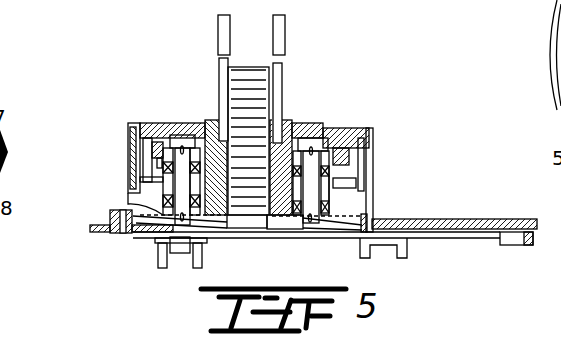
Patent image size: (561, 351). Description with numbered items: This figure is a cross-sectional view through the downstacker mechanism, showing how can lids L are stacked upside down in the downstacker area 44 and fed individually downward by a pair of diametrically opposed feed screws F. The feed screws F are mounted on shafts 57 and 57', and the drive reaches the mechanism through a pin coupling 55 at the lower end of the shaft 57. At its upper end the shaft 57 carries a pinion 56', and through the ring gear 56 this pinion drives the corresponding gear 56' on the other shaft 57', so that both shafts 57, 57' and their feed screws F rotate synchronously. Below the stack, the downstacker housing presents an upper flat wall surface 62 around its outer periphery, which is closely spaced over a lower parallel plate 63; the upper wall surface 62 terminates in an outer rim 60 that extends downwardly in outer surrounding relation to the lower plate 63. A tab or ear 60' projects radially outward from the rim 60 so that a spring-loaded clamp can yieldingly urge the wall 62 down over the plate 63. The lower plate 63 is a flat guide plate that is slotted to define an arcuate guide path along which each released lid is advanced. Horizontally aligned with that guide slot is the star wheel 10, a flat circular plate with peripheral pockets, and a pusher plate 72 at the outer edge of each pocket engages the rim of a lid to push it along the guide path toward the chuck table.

The star wheel 10 is at (470, 242).
The downstacker area 44 is at (229, 76).
The pin coupling 55 is at (158, 258).
The ring gear 56 is at (249, 164).
The pinion 56' is at (246, 151).
The shaft 57 is at (186, 168).
The shaft 57' is at (333, 156).
The rim 60 is at (94, 206).
The ear 60' is at (74, 217).
The upper flat wall surface 62 is at (432, 219).
The lower plate 63 is at (133, 237).
The pusher plate 72 is at (505, 236).
The feed screws F is at (133, 216).
The can lids L is at (256, 68).